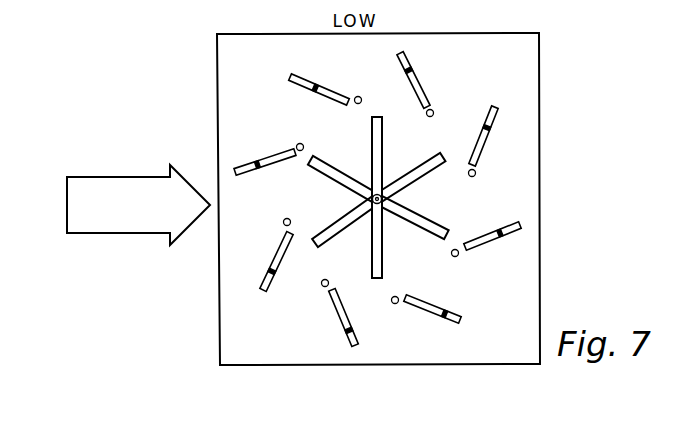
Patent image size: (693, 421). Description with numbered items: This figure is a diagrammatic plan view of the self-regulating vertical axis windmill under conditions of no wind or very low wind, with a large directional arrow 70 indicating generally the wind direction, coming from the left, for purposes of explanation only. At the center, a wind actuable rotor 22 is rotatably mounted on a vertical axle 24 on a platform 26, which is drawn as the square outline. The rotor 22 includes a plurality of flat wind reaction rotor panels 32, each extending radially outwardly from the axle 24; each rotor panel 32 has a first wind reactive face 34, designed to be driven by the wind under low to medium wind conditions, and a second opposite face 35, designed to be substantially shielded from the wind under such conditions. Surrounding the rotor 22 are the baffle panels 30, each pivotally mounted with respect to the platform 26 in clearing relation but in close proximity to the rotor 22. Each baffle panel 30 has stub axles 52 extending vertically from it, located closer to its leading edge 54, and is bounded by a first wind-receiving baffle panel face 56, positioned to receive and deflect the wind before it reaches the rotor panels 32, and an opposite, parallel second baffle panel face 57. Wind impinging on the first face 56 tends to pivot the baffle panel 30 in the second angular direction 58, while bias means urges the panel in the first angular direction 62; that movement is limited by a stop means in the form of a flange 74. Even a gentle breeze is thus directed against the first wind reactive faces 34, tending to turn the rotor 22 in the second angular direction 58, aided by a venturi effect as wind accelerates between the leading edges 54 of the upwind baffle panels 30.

The wind actuable rotor 22 is at (382, 197).
The vertical axle 24 is at (385, 188).
The platform 26 is at (520, 53).
The baffle panel 30 is at (495, 120).
The wind reaction rotor panel 32 is at (450, 233).
The first wind reactive face 34 is at (344, 187).
The second opposite face 35 is at (373, 262).
The stub axle 52 is at (275, 270).
The leading edge 54 is at (235, 177).
The first wind-receiving baffle panel face 56 is at (340, 92).
The second baffle panel face 57 is at (325, 93).
The second angular direction 58 is at (268, 148).
The first angular direction 62 is at (273, 173).
The directional arrow 70 is at (166, 203).
The flange 74 is at (392, 306).